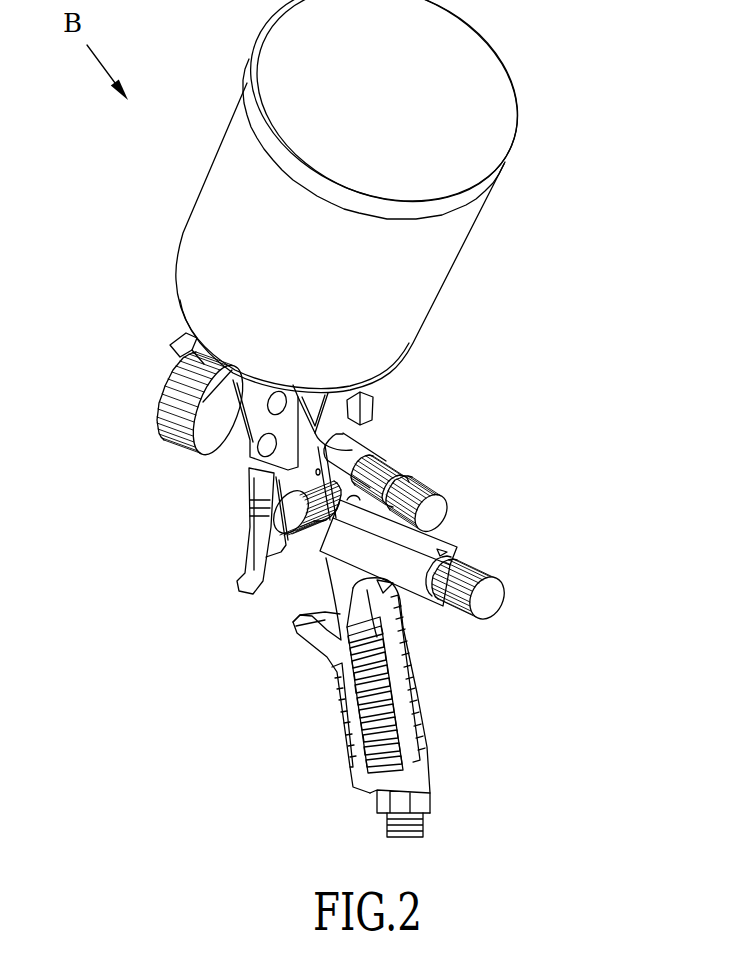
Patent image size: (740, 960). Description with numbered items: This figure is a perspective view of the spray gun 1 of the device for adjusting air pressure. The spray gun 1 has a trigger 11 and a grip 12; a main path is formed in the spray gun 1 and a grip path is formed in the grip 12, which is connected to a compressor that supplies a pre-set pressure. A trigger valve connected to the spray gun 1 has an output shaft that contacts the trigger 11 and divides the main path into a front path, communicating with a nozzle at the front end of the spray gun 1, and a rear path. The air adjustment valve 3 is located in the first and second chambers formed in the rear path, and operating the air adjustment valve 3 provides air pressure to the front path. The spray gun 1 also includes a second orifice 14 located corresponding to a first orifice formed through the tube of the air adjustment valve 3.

The spray gun 1 is at (308, 572).
The trigger 11 is at (249, 556).
The grip 12 is at (400, 688).
The second orifice 14 is at (405, 545).
The air adjustment valve 3 is at (516, 567).